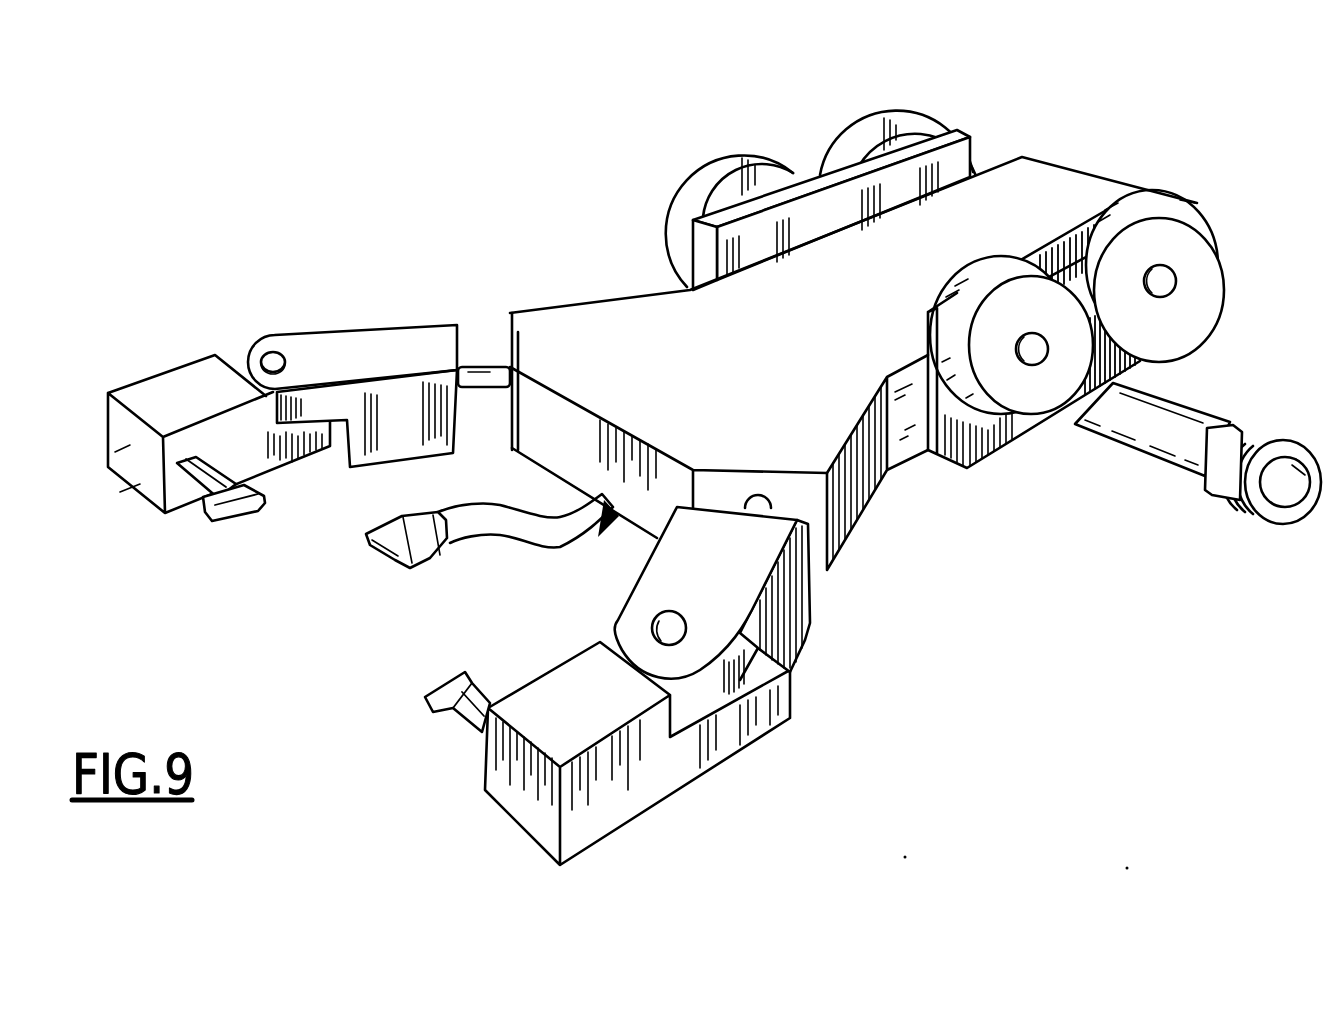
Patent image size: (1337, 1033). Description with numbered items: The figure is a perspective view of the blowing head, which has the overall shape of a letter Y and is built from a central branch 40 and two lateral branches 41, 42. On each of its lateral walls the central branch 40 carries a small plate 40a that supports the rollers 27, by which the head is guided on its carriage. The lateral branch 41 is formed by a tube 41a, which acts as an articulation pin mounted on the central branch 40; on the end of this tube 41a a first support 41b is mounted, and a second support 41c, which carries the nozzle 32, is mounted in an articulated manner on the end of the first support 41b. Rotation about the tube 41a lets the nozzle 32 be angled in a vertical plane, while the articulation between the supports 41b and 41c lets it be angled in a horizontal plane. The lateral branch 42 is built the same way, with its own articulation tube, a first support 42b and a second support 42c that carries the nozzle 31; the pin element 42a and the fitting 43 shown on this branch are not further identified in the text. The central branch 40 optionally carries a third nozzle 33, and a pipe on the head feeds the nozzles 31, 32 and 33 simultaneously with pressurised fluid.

The rollers 27 is at (871, 269).
The nozzle 31 is at (435, 690).
The nozzle 32 is at (223, 520).
The nozzle 33 is at (383, 555).
The central branch 40 is at (871, 318).
The small plate 40a is at (803, 222).
The lateral branch 41 is at (317, 348).
The tube 41a is at (487, 367).
The first support 41b is at (350, 360).
The second support 41c is at (172, 398).
The lateral branch 42 is at (719, 617).
The pin 42a is at (758, 505).
The first support 42b is at (705, 530).
The second support 42c is at (553, 700).
The hose fitting 43 is at (1258, 430).